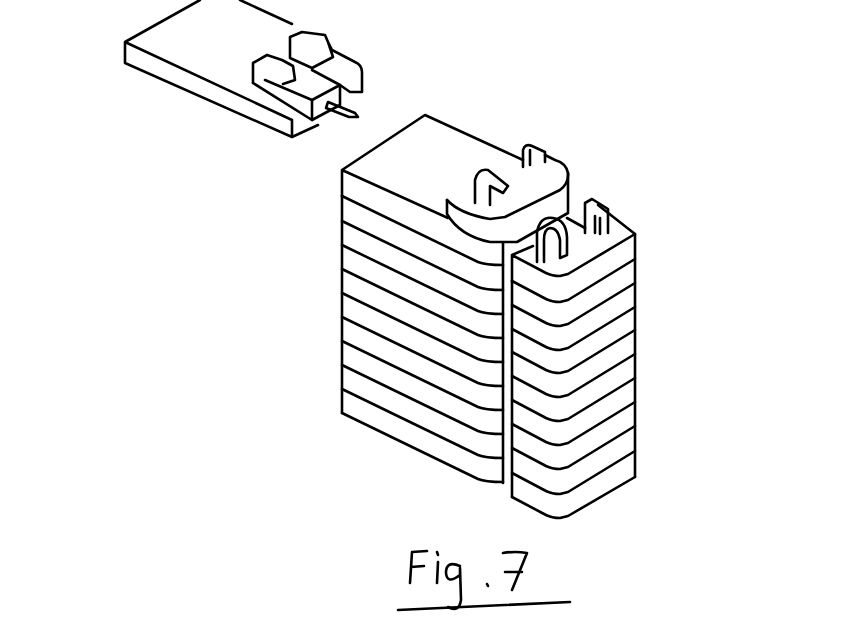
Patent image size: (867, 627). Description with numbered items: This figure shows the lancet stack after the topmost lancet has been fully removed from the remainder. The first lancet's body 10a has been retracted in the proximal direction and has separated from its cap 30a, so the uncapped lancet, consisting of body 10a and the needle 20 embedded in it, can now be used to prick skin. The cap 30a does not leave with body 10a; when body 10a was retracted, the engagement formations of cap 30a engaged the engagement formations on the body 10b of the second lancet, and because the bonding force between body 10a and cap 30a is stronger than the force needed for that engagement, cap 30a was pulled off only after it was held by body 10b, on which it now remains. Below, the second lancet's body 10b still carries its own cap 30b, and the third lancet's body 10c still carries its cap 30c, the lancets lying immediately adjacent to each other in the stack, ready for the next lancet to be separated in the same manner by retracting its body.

The body 10a is at (140, 64).
The body 10b is at (343, 184).
The body 10c is at (346, 212).
The needle 20 is at (352, 102).
The cap 30a is at (562, 163).
The cap 30b is at (777, 205).
The cap 30c is at (627, 273).